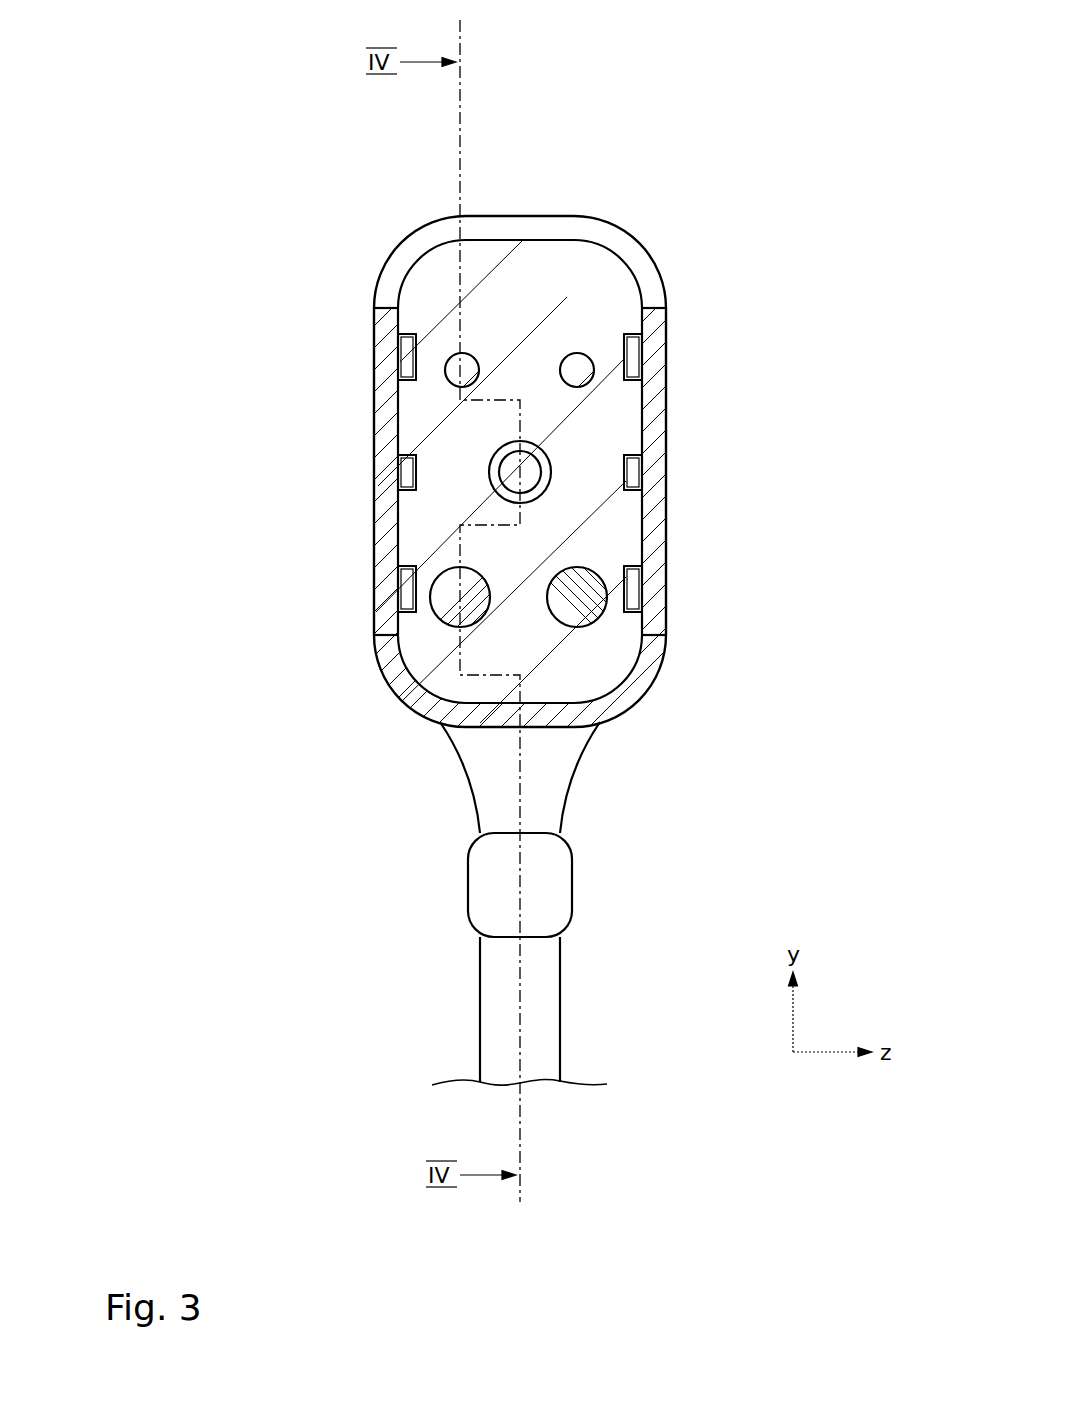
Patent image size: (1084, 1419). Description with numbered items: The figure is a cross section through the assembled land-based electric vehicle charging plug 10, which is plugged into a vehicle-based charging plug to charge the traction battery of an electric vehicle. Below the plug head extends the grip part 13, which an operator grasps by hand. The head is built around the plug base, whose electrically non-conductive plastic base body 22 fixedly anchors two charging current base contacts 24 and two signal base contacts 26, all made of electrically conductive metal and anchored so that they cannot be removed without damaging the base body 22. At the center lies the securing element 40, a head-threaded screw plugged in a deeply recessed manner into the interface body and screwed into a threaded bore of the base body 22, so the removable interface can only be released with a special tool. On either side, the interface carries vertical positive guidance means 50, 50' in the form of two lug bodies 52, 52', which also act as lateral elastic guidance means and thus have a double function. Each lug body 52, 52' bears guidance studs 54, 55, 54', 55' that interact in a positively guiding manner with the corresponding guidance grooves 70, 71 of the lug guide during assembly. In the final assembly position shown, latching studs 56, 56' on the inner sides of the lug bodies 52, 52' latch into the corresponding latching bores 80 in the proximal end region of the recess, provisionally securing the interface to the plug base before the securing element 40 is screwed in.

The electric vehicle charging plug 10 is at (275, 85).
The grip part 13 is at (452, 777).
The base body 22 is at (567, 297).
The charging current base contacts 24 is at (447, 608).
The signal base contacts 26 is at (455, 372).
The securing element 40 is at (526, 470).
The vertical positive guidance means 50 is at (542, 400).
The vertical positive guidance means 50' is at (542, 400).
The lug body 52 is at (741, 471).
The lug body 52' is at (316, 471).
The guidance stud 54 is at (732, 338).
The guidance stud 54' is at (399, 310).
The guidance stud 55 is at (706, 604).
The guidance stud 55' is at (324, 612).
The latching stud 56 is at (685, 470).
The latching stud 56' is at (341, 450).
The guidance groove 70 is at (625, 358).
The guidance groove 71 is at (626, 577).
The latching bore 80 is at (626, 481).